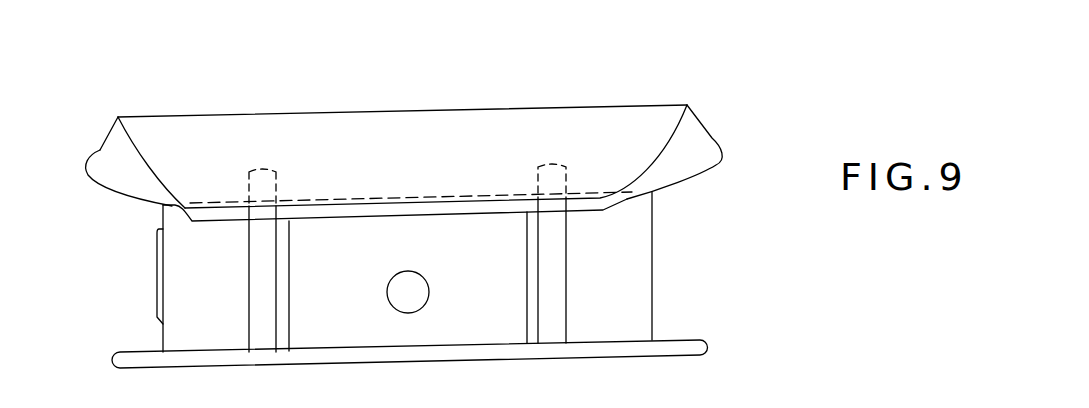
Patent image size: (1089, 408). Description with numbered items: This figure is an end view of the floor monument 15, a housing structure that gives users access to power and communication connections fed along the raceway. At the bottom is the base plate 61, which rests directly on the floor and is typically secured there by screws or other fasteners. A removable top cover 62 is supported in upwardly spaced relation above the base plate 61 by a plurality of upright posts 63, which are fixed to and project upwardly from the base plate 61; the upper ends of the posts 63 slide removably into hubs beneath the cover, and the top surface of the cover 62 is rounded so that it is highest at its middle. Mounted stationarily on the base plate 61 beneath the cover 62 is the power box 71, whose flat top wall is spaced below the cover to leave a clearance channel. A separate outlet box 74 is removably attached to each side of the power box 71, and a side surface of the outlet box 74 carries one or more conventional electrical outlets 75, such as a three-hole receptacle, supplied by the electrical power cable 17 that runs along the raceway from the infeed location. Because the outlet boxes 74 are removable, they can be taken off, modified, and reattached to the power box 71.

The monument 15 is at (626, 97).
The top cover 62 is at (295, 125).
The upright posts 63 is at (260, 260).
The base plate 61 is at (698, 345).
The power box 71 is at (475, 322).
The outlet box 74 is at (216, 335).
The electrical outlets 75 is at (157, 272).
The electrical power cable 17 is at (403, 308).